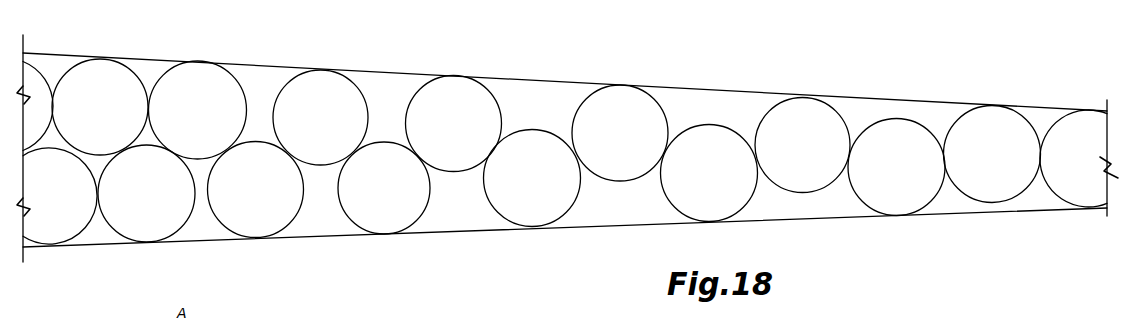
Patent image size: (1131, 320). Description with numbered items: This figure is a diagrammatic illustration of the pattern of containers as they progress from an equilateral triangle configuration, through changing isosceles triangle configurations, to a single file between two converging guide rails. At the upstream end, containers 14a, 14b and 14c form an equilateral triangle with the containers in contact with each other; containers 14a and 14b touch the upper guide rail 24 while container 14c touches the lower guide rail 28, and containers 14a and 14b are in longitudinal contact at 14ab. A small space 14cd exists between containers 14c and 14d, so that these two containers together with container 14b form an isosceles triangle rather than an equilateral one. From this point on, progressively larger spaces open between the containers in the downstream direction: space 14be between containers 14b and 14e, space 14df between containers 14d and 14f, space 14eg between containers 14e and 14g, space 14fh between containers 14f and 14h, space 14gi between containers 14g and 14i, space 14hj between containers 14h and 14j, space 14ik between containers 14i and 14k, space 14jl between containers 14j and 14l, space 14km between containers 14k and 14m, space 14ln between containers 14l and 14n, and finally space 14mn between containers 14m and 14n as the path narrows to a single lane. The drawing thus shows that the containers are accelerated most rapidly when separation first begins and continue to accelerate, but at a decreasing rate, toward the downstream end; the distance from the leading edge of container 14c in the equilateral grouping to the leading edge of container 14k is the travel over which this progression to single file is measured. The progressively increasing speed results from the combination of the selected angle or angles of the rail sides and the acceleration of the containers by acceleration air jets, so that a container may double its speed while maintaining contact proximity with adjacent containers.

The container 14a is at (113, 117).
The container 14b is at (210, 120).
The container 14c is at (159, 203).
The container 14d is at (268, 199).
The container 14e is at (333, 127).
The container 14f is at (397, 198).
The container 14g is at (466, 133).
The container 14h is at (545, 188).
The container 14i is at (633, 143).
The container 14j is at (722, 183).
The container 14k is at (815, 155).
The container 14l is at (909, 177).
The container 14m is at (1005, 164).
The container 14n is at (1093, 162).
The longitudinal contact 14ab is at (149, 92).
The space 14be is at (267, 88).
The space 14eg is at (392, 97).
The space 14gi is at (539, 107).
The space 14ik is at (708, 110).
The space 14km is at (893, 108).
The space 14mn is at (1040, 133).
The space 14cd is at (200, 217).
The space 14df is at (318, 207).
The space 14fh is at (455, 205).
The space 14hj is at (618, 202).
The space 14jl is at (787, 202).
The space 14ln is at (948, 195).
The guide rail 24 is at (242, 69).
The guide rail 28 is at (110, 238).